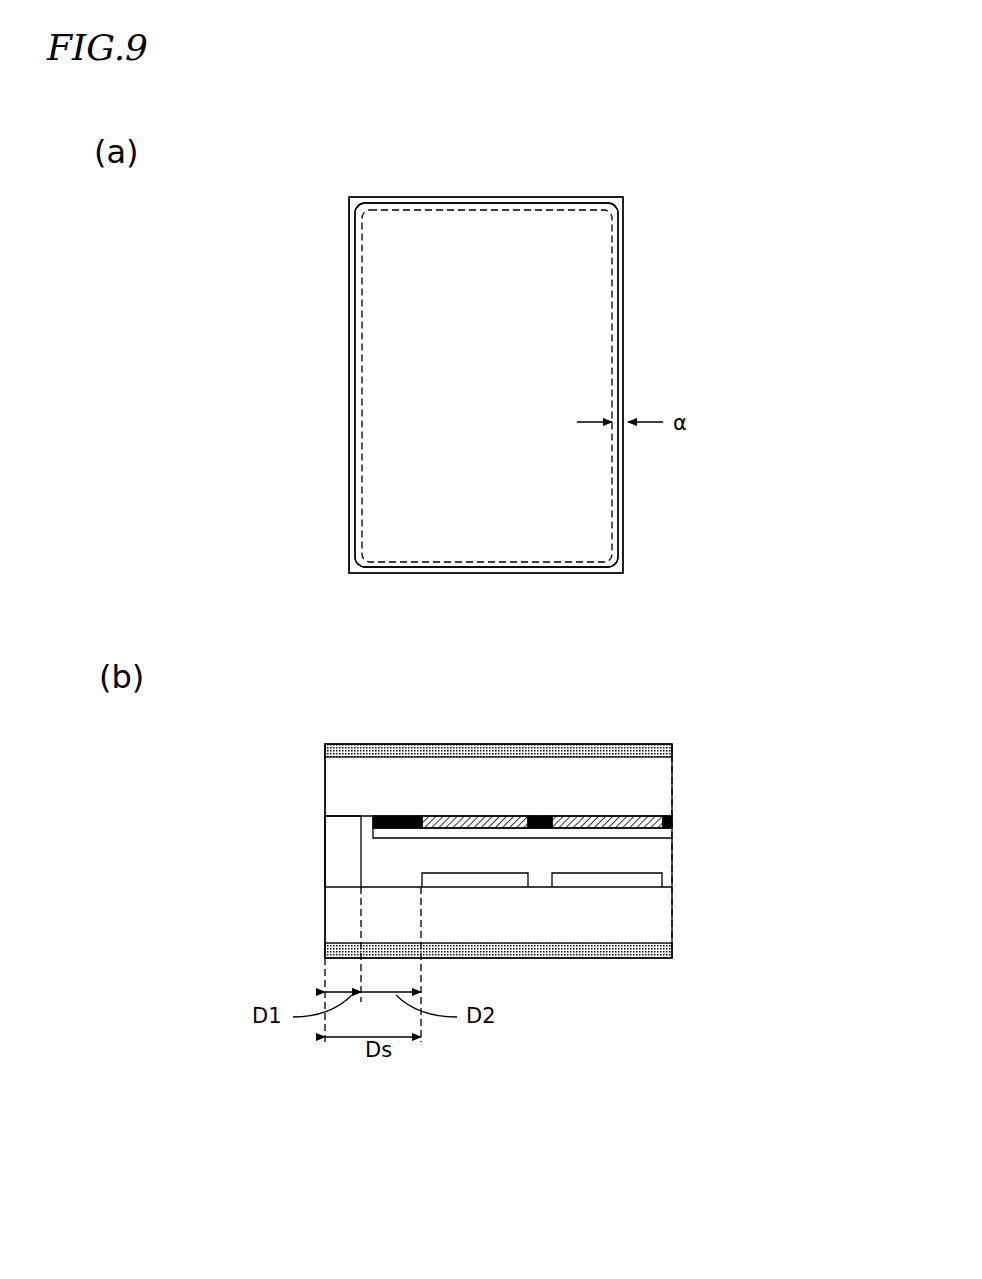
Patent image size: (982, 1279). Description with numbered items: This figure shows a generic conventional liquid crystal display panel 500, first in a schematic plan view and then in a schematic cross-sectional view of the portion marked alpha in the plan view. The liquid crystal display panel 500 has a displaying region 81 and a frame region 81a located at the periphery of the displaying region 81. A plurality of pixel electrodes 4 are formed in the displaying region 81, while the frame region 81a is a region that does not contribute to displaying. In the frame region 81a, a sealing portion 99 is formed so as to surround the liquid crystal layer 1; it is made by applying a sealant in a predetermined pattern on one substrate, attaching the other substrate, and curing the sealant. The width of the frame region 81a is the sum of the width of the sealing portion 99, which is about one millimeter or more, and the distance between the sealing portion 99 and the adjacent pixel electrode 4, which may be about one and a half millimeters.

The liquid crystal display panel 500 is at (652, 168).
The displaying region 81 is at (577, 279).
The frame region 81a is at (619, 538).
The sealing portion 99 is at (338, 845).
The liquid crystal layer 1 is at (688, 840).
The pixel electrode 4 is at (642, 878).